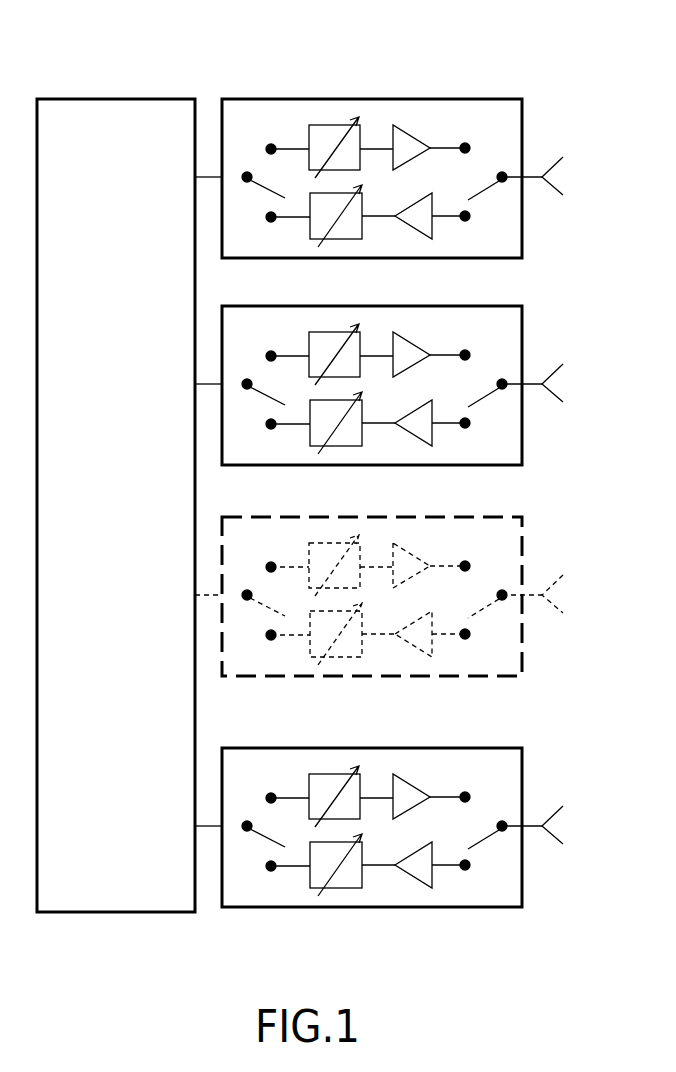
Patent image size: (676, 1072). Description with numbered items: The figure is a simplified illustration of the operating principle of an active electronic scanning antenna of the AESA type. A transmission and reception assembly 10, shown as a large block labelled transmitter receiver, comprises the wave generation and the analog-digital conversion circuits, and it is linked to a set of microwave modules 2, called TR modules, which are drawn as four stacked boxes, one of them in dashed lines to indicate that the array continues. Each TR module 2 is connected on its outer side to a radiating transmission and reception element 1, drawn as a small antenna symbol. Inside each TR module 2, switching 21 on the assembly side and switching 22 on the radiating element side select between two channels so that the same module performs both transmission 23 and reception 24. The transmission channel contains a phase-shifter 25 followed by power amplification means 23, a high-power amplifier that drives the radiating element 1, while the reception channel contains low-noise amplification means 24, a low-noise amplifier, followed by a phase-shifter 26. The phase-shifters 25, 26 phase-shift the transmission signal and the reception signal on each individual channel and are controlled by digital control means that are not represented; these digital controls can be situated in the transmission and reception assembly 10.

The radiating transmission and reception element 1 is at (562, 156).
The microwave module 2 is at (402, 99).
The transmission and reception assembly 10 is at (105, 99).
The switching 21 is at (265, 188).
The switching 22 is at (487, 193).
The power amplification means 23 is at (413, 123).
The low-noise amplification means 24 is at (413, 194).
The phase-shifter 25 is at (307, 130).
The phase-shifter 26 is at (310, 232).